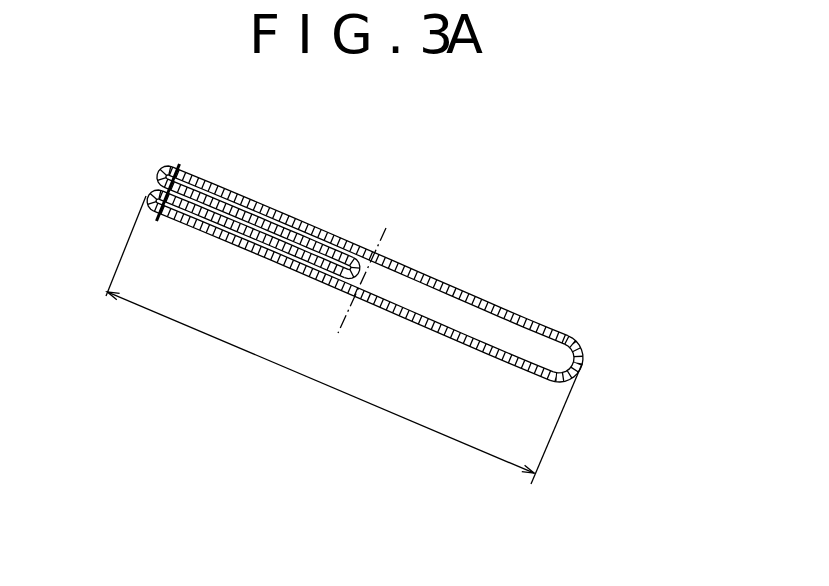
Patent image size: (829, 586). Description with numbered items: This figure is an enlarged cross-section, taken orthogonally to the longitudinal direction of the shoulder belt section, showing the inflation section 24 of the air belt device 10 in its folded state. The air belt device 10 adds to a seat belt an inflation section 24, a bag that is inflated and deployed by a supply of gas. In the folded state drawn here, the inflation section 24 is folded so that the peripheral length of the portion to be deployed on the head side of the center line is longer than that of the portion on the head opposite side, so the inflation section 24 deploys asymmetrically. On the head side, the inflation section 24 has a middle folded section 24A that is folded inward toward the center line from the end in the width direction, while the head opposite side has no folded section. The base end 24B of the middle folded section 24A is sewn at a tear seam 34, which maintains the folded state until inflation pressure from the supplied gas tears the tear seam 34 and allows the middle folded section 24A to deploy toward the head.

The air belt device 10 is at (590, 238).
The inflation section 24 is at (455, 281).
The middle folded section 24A is at (297, 228).
The base end 24B is at (147, 193).
The tear seam 34 is at (178, 167).